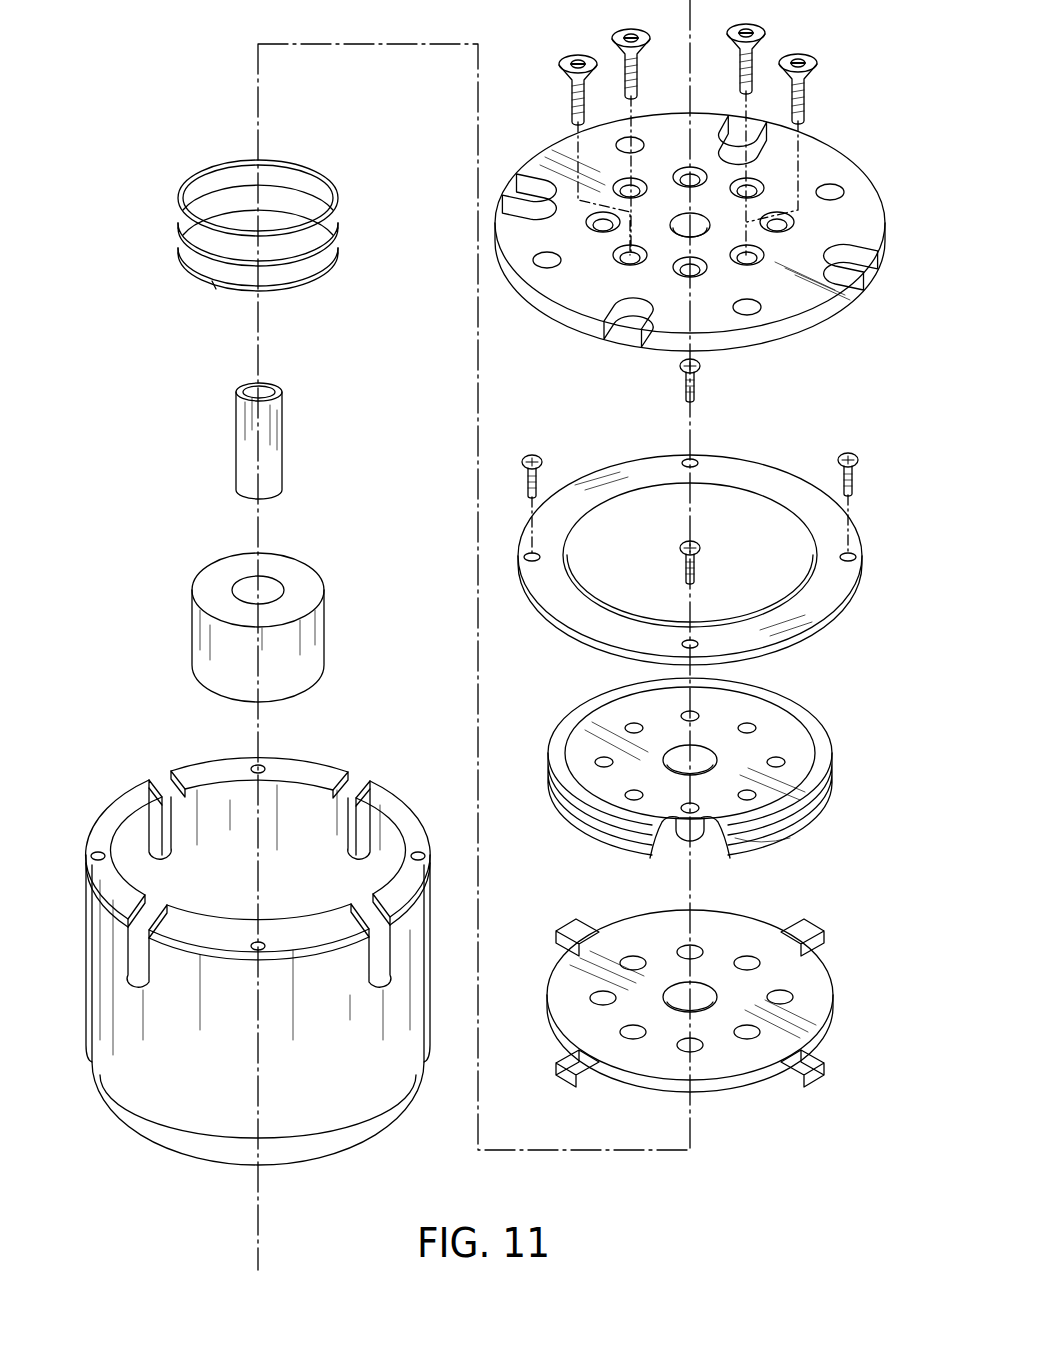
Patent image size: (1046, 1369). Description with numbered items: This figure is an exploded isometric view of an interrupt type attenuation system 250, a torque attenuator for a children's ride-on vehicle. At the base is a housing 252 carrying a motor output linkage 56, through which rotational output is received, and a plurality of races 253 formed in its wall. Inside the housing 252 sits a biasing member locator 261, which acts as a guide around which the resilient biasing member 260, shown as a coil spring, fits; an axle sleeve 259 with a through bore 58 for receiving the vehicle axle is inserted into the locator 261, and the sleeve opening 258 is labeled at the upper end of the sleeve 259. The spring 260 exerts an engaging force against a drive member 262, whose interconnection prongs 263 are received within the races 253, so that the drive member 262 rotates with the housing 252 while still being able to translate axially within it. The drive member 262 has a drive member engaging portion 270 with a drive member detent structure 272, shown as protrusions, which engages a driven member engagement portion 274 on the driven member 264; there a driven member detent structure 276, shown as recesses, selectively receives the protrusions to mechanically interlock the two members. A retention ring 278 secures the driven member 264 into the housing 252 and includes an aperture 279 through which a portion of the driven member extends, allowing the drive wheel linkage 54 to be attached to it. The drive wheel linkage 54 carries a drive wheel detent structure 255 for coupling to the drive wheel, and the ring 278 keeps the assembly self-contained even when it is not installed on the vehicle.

The drive wheel linkage 54 is at (882, 190).
The motor output linkage 56 is at (240, 1168).
The through bore 58 is at (693, 228).
The interrupt type attenuation system 250 is at (128, 68).
The housing 252 is at (78, 977).
The races 253 is at (140, 778).
The drive wheel detent structure 255 is at (503, 193).
The bore 258 is at (272, 385).
The axle sleeve 259 is at (232, 418).
The biasing member 260 is at (345, 222).
The biasing member locator 261 is at (190, 632).
The drive member 262 is at (842, 978).
The interconnection prongs 263 is at (580, 933).
The driven member 264 is at (842, 768).
The drive member engaging portion 270 is at (808, 1018).
The drive member detent structure 272 is at (652, 952).
The driven member engagement portion 274 is at (748, 857).
The driven member detent structure 276 is at (691, 840).
The retention ring 278 is at (893, 525).
The aperture 279 is at (717, 532).